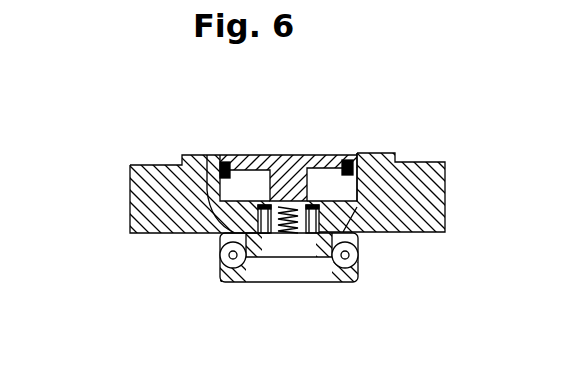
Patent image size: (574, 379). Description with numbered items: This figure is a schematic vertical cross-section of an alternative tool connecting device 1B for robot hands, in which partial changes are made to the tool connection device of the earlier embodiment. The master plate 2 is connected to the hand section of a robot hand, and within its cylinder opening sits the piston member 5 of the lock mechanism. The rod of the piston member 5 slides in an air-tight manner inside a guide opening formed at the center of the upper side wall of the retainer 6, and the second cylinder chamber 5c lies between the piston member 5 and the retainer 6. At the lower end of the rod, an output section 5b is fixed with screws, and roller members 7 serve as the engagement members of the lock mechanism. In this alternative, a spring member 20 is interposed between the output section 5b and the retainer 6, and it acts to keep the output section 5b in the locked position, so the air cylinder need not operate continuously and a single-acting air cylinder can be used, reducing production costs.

The tool connecting device 1B is at (128, 73).
The master plate 2 is at (171, 160).
The piston member 5 is at (285, 158).
The output section 5b is at (253, 258).
The second cylinder chamber 5c is at (250, 183).
The retainer 6 is at (217, 163).
The roller members 7 is at (222, 262).
The spring member 20 is at (280, 258).